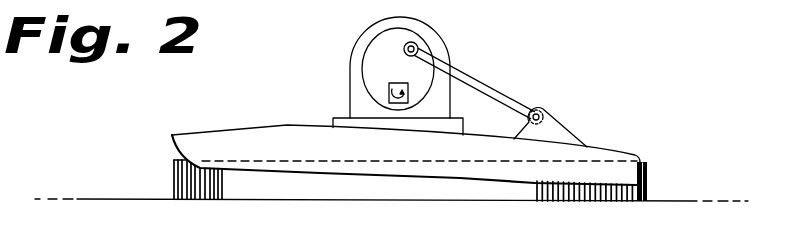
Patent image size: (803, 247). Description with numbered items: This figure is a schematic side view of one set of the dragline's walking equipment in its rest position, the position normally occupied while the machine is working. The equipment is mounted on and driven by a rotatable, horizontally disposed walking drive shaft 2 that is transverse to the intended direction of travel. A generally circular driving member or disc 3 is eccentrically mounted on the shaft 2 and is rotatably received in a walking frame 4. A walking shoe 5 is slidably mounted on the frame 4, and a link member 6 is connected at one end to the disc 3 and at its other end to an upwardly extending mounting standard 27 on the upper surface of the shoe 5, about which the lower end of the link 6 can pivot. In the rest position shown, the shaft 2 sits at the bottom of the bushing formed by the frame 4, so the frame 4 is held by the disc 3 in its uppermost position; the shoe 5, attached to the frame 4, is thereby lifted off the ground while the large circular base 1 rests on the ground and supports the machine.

The circular base 1 is at (648, 180).
The walking drive shaft 2 is at (389, 90).
The driving member or disc 3 is at (362, 64).
The walking frame 4 is at (451, 61).
The walking shoe 5 is at (387, 177).
The link member 6 is at (513, 96).
The mounting standard 27 is at (562, 122).